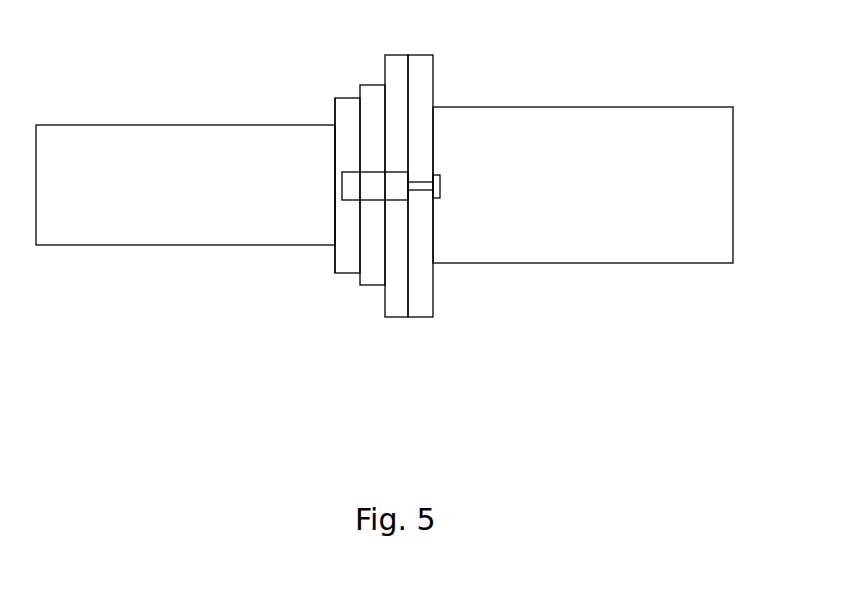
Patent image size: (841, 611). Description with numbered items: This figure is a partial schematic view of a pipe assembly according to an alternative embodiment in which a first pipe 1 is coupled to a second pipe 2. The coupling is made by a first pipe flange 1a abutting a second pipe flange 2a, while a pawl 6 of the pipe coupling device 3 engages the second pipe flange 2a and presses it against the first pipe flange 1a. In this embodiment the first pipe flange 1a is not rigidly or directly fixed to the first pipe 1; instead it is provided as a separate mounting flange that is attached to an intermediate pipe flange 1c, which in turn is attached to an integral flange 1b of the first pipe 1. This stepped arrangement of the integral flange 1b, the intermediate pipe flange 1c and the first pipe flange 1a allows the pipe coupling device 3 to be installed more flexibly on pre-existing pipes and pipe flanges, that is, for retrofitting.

The first pipe 1 is at (132, 245).
The first pipe flange 1a is at (385, 317).
The integral flange 1b is at (335, 107).
The intermediate pipe flange 1c is at (363, 285).
The second pipe 2 is at (695, 263).
The second pipe flange 2a is at (433, 65).
The pipe coupling device 3 is at (333, 184).
The pawl 6 is at (440, 192).